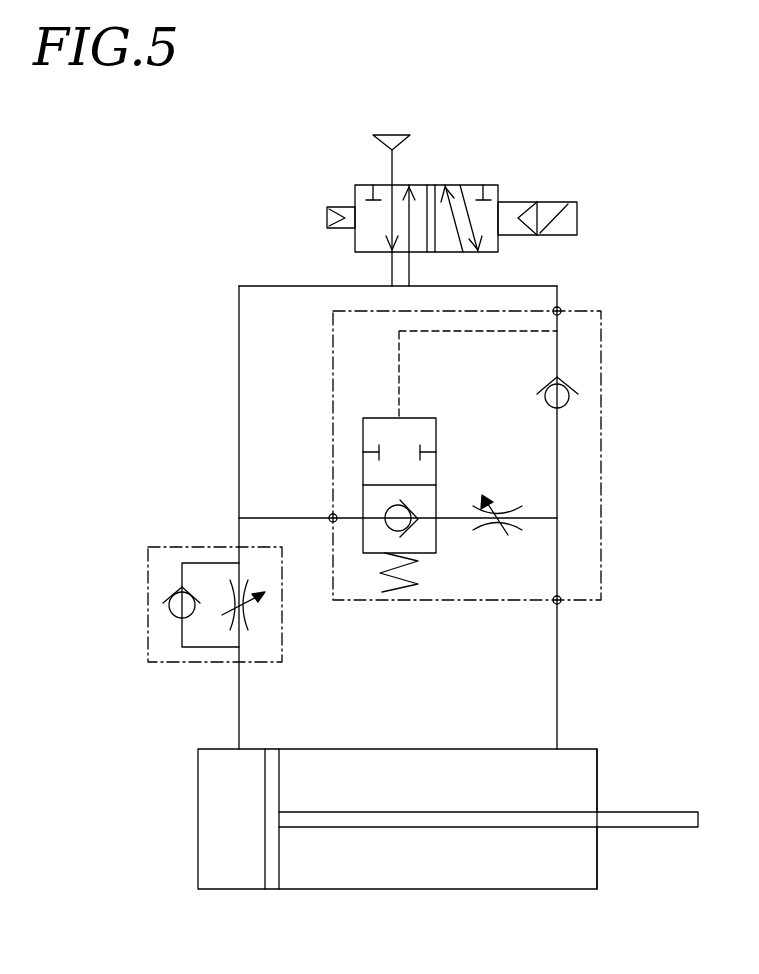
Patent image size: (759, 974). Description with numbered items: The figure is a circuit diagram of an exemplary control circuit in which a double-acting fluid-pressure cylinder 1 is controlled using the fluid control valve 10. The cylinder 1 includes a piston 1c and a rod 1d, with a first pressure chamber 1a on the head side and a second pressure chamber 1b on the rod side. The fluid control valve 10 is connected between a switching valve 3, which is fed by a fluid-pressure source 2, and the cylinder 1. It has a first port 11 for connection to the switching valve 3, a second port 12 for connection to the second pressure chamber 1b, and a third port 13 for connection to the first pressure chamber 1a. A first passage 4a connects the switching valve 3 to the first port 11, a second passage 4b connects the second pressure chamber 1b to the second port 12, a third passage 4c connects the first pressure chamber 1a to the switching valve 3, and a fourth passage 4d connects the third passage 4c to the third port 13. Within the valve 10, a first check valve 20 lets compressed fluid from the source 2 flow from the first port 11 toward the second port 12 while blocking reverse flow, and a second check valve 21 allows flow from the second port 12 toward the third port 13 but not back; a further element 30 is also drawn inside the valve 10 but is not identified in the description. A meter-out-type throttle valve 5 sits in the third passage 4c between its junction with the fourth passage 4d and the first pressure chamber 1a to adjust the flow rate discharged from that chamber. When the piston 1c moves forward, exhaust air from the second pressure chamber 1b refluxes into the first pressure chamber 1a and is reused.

The double-acting fluid-pressure cylinder 1 is at (622, 766).
The first pressure chamber 1a is at (246, 836).
The second pressure chamber 1b is at (443, 871).
The piston 1c is at (272, 863).
The rod 1d is at (640, 818).
The fluid-pressure source 2 is at (392, 138).
The switching valve 3 is at (492, 184).
The first passage 4a is at (543, 285).
The second passage 4b is at (558, 650).
The third passage 4c is at (239, 687).
The fourth passage 4d is at (267, 518).
The throttle valve 5 is at (230, 597).
The fluid control valve 10 is at (601, 333).
The first port 11 is at (562, 310).
The second port 12 is at (560, 602).
The third port 13 is at (332, 522).
The first check valve 20 is at (562, 398).
The second check valve 21 is at (437, 432).
The variable throttle 30 is at (510, 508).